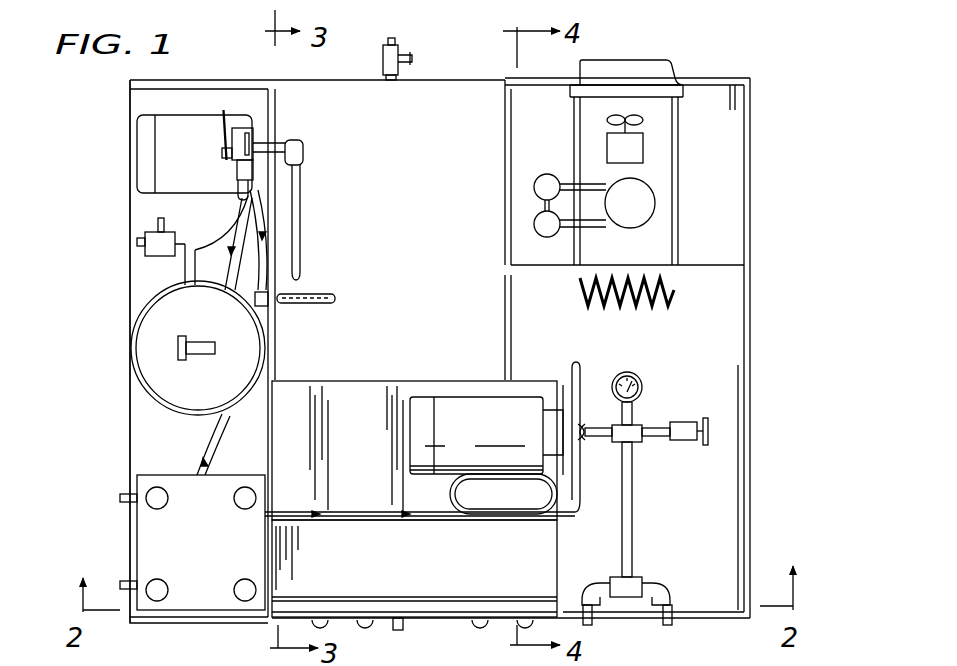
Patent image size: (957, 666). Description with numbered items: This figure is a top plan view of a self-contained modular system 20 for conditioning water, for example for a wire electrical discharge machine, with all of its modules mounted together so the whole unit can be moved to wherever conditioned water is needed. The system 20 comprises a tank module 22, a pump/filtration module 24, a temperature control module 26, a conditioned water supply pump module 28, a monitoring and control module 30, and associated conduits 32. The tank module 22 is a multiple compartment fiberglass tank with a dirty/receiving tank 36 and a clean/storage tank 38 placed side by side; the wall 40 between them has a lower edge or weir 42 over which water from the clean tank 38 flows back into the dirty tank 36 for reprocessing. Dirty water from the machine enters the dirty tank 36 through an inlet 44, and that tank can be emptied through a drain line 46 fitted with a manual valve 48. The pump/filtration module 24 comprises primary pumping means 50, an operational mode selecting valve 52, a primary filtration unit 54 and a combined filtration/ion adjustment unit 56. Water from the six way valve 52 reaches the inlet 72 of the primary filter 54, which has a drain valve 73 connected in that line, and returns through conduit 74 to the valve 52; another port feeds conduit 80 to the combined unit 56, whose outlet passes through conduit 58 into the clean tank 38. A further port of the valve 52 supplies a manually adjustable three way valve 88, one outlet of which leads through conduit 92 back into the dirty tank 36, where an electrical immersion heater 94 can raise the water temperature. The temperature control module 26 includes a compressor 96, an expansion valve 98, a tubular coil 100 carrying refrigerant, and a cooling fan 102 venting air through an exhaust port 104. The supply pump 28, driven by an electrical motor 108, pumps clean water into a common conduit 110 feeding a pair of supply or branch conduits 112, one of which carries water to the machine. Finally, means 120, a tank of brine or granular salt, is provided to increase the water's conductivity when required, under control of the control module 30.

The system 20 is at (702, 58).
The tank module 22 is at (454, 72).
The pump/filtration module 24 is at (150, 289).
The temperature control module 26 is at (682, 186).
The conditioned water supply pump module 28 is at (543, 424).
The monitoring and control module 30 is at (431, 580).
The conduits 32 is at (634, 480).
The dirty/receiving tank 36 is at (398, 237).
The clean/storage tank 38 is at (686, 367).
The wall 40 is at (513, 345).
The weir 42 is at (503, 233).
The inlet 44 is at (400, 632).
The drain line 46 is at (384, 78).
The manual valve 48 is at (398, 55).
The primary pumping means 50 is at (204, 168).
The operational mode selecting valve 52 is at (230, 170).
The primary filtration unit 54 is at (215, 333).
The combined filtration/ion adjustment unit 56 is at (217, 550).
The conduit 58 is at (582, 368).
The inlet of the primary filter 72 is at (185, 262).
The drain valve 73 is at (145, 240).
The conduit 74 is at (240, 262).
The conduit 80 is at (255, 282).
The manually adjustable three way valve 88 is at (258, 152).
The conduit 92 is at (302, 210).
The electrical immersion heater 94 is at (337, 298).
The compressor 96 is at (647, 217).
The expansion valve 98 is at (557, 236).
The tubular coil 100 is at (676, 300).
The cooling fan 102 is at (607, 147).
The exhaust port 104 is at (640, 58).
The electrical motor 108 is at (466, 405).
The common conduit 110 is at (632, 530).
The supply or branch conduits 112 is at (663, 626).
The means for increasing conductivity 120 is at (528, 505).